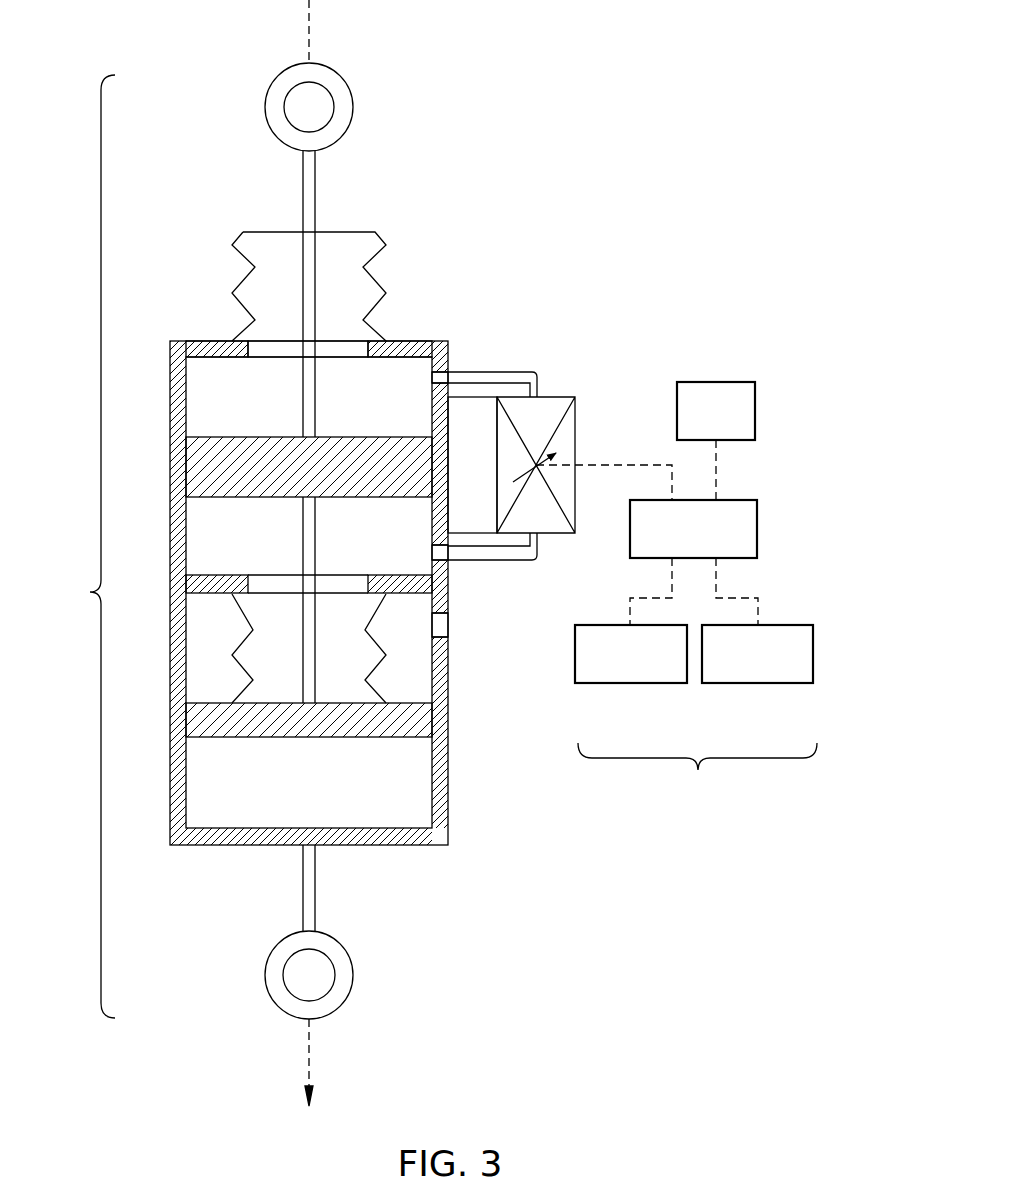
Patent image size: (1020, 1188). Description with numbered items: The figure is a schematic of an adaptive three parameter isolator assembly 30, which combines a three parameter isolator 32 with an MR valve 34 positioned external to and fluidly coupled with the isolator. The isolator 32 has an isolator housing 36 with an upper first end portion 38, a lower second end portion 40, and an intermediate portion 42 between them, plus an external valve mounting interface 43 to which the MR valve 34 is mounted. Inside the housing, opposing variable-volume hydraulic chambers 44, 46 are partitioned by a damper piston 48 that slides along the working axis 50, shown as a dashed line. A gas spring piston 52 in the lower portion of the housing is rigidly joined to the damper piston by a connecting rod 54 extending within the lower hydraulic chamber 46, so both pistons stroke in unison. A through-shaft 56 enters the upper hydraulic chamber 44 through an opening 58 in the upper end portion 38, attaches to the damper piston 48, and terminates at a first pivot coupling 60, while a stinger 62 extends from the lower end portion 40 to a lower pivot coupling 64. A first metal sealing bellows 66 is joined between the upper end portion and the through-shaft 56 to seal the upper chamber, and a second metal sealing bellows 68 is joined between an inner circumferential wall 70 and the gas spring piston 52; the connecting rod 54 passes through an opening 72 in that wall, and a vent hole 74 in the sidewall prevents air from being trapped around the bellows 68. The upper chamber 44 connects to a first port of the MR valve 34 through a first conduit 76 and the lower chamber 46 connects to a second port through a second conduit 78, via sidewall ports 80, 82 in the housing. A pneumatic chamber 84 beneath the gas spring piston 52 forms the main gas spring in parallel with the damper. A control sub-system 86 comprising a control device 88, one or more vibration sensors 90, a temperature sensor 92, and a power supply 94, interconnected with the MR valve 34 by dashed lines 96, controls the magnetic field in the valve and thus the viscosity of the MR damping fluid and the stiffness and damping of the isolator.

The adaptive three parameter isolator assembly 30 is at (643, 137).
The three parameter isolator 32 is at (86, 546).
The MR valve 34 is at (562, 398).
The isolator housing 36 is at (395, 848).
The first end portion 38 is at (193, 341).
The second end portion 40 is at (200, 846).
The intermediate portion 42 is at (170, 567).
The external valve mounting interface 43 is at (459, 476).
The upper hydraulic chamber 44 is at (332, 419).
The lower hydraulic chamber 46 is at (359, 531).
The damper piston 48 is at (296, 479).
The working axis 50 is at (321, 25).
The gas spring piston 52 is at (296, 733).
The connecting rod 54 is at (302, 641).
The through-shaft 56 is at (302, 383).
The opening 58 is at (325, 347).
The first pivot coupling 60 is at (354, 107).
The stinger 62 is at (302, 888).
The lower pivot coupling 64 is at (354, 974).
The first metal sealing bellows 66 is at (377, 283).
The second metal sealing bellows 68 is at (241, 634).
The inner circumferential wall 70 is at (205, 578).
The opening 72 is at (348, 578).
The vent hole 74 is at (448, 633).
The first conduit 76 is at (479, 372).
The second conduit 78 is at (500, 560).
The sidewall port 80 is at (432, 380).
The sidewall port 82 is at (432, 558).
The pneumatic chamber 84 is at (296, 794).
The control sub-system 86 is at (697, 771).
The control device 88 is at (758, 529).
The vibration sensor 90 is at (628, 683).
The temperature sensor 92 is at (758, 683).
The power supply 94 is at (756, 413).
The dashed lines 96 is at (610, 463).